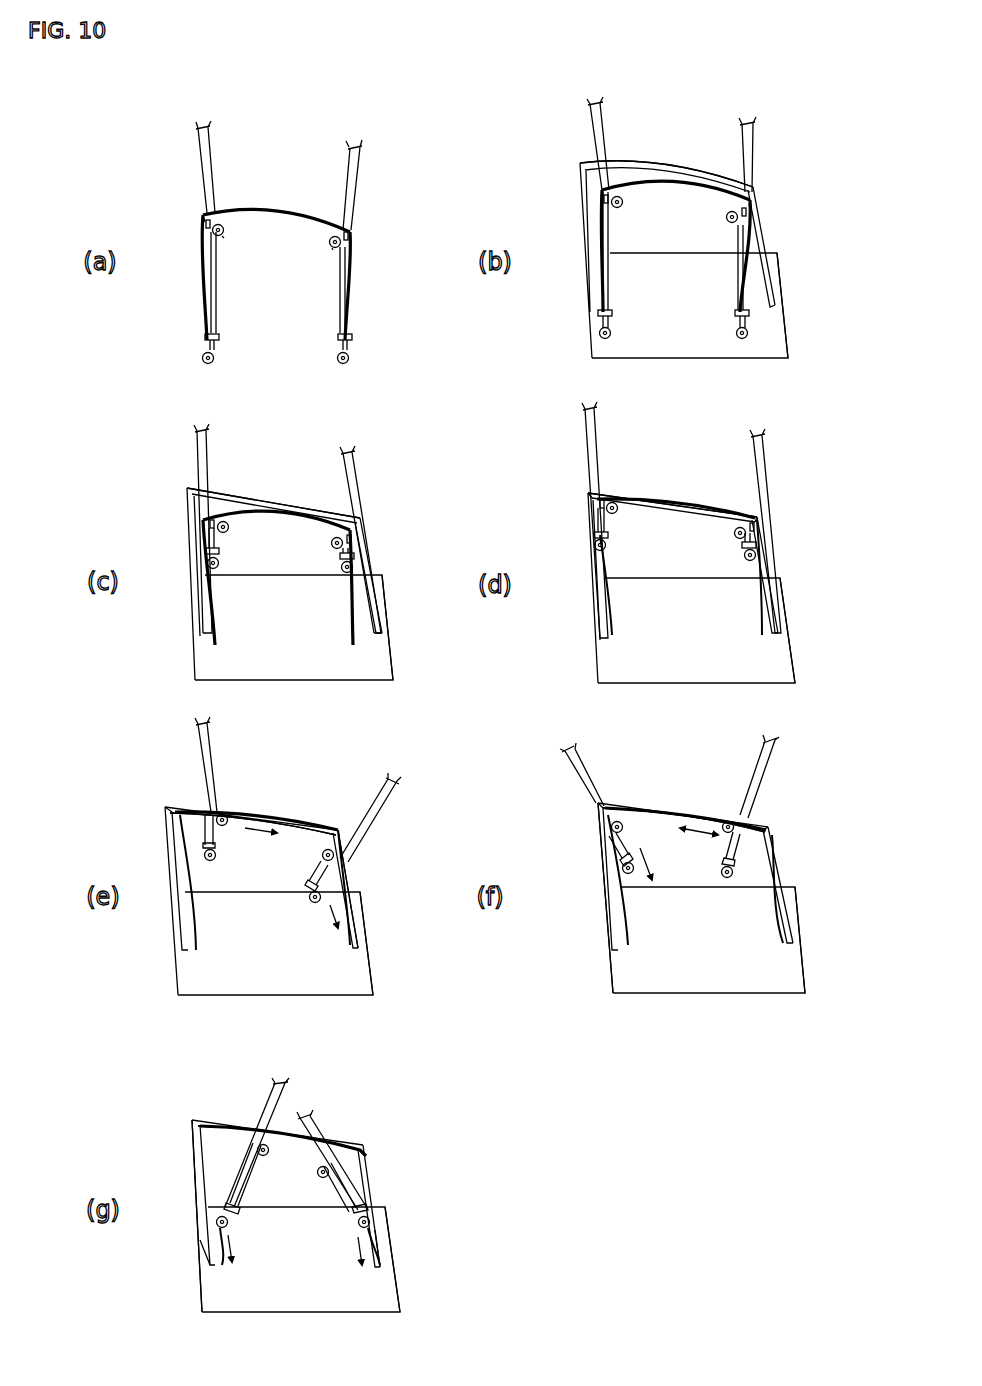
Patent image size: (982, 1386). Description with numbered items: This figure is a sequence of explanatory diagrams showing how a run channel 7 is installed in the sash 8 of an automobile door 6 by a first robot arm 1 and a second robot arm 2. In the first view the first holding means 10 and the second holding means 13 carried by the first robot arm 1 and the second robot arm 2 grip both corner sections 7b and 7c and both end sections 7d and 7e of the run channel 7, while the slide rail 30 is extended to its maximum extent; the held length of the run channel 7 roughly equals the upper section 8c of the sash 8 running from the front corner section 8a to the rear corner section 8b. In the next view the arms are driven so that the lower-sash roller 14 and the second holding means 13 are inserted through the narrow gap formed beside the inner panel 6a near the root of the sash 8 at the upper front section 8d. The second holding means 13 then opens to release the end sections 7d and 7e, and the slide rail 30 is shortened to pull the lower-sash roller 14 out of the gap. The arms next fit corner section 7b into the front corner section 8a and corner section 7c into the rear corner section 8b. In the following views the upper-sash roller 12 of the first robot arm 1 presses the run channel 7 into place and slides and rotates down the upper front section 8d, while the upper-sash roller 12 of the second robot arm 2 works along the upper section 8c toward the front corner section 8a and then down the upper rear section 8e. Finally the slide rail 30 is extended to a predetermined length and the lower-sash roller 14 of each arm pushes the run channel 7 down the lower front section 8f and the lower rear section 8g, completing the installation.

The first robot arm 1 is at (360, 185).
The second robot arm 2 is at (212, 166).
The automobile door 6 is at (795, 235).
The inner panel 6a is at (780, 333).
The run channel 7 is at (273, 204).
The corner section 7b is at (351, 232).
The corner section 7c is at (203, 213).
The end section 7d is at (352, 341).
The end section 7e is at (206, 347).
The automobile door sash 8 is at (705, 165).
The front corner section 8a is at (762, 512).
The rear corner section 8b is at (590, 495).
The upper section 8c is at (260, 809).
The upper front section 8d is at (350, 869).
The upper rear section 8e is at (598, 841).
The lower front section 8f is at (393, 1244).
The lower rear section 8g is at (205, 1251).
The first holding means 10 is at (213, 222).
The upper-sash roller 12 is at (222, 236).
The second holding means 13 is at (219, 338).
The lower-sash roller 14 is at (213, 363).
The slide rail 30 is at (217, 286).